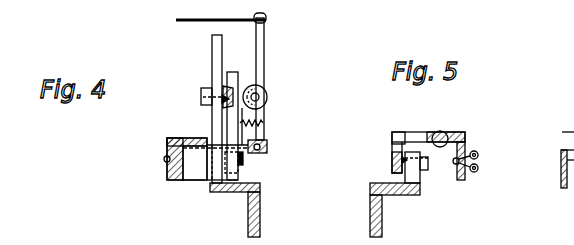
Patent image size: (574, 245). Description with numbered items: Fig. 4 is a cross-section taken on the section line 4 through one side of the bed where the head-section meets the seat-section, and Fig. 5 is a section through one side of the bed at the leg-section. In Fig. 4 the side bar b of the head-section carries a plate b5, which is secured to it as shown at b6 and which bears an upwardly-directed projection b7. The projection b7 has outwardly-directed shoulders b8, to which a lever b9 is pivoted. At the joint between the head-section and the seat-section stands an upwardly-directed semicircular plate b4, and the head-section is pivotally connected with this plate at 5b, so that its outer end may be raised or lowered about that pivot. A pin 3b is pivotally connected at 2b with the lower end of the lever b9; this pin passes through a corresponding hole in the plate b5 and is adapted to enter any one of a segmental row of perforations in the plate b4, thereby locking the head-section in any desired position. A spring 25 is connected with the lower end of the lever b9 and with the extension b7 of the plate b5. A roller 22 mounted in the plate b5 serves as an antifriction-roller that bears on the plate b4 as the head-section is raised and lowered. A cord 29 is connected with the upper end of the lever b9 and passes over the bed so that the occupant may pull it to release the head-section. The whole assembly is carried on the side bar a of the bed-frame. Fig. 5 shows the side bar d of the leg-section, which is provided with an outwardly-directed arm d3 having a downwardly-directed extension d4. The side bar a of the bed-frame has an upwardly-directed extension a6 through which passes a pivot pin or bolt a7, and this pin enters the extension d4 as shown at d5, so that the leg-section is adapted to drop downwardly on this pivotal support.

In FIG. 4, the section line 4 is at (111, 0).
In FIG. 4, the cord 29 is at (218, 19).
In FIG. 4, the lever b9 is at (263, 34).
In FIG. 4, the semicircular plate b4 is at (212, 49).
In FIG. 4, the upwardly-directed projection b7 is at (240, 74).
In FIG. 4, the outwardly-directed shoulders b8 is at (268, 97).
In FIG. 4, the pivotal connection 5b is at (201, 100).
In FIG. 4, the spring 25 is at (265, 123).
In FIG. 4, the pivotal connection 2b is at (268, 147).
In FIG. 4, the pin 3b is at (250, 156).
In FIG. 4, the side bar b is at (166, 143).
In FIG. 4, the securing point b6 is at (166, 152).
In FIG. 4, the plate b5 is at (198, 173).
In FIG. 4, the roller 22 is at (244, 166).
In FIG. 4, the side bar of bed-frame a is at (261, 228).
In FIG. 5, the side bar of bed-frame a is at (382, 222).
In FIG. 5, the side bar of leg-section d is at (466, 144).
In FIG. 5, the outwardly-directed arm d3 is at (443, 128).
In FIG. 5, the downwardly-directed extension d4 is at (392, 136).
In FIG. 5, the pivot point d5 is at (392, 160).
In FIG. 5, the upwardly-directed extension a6 is at (424, 182).
In FIG. 5, the pivot pin a7 is at (423, 170).